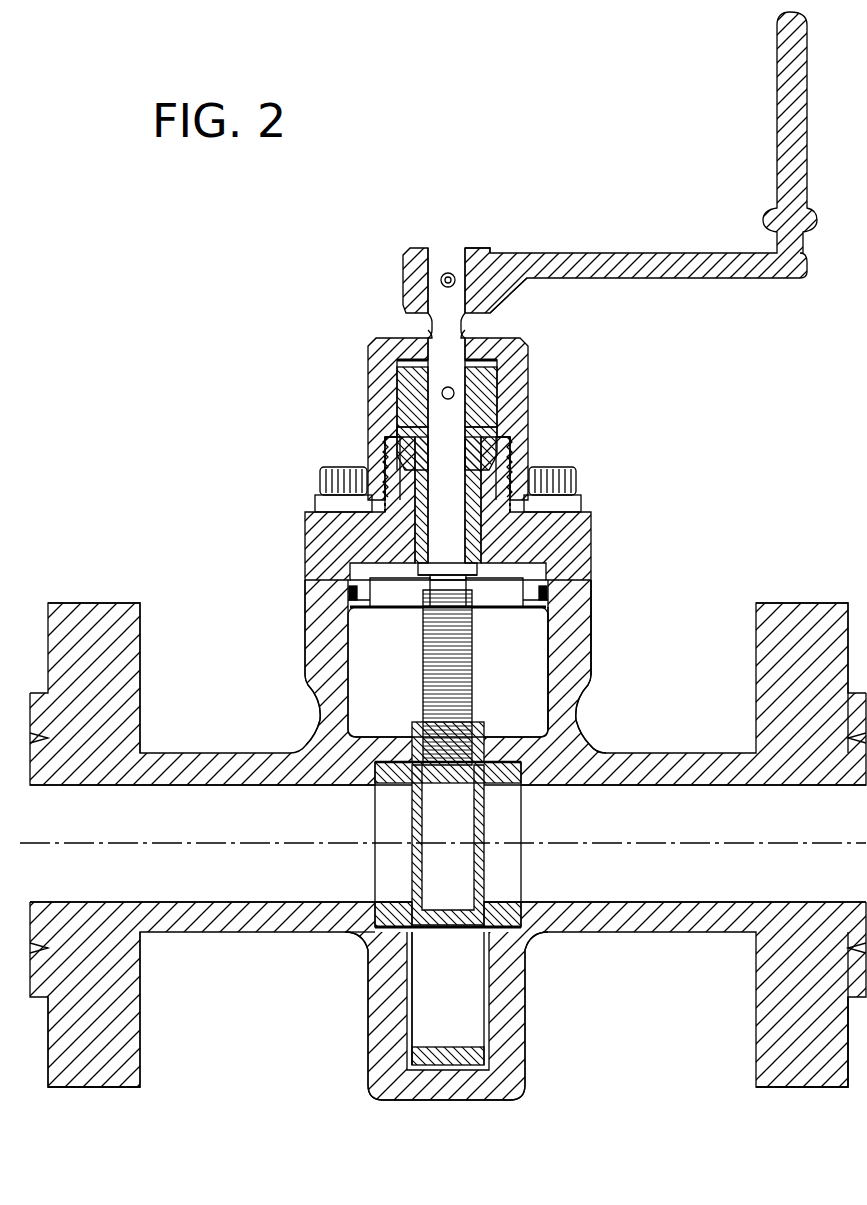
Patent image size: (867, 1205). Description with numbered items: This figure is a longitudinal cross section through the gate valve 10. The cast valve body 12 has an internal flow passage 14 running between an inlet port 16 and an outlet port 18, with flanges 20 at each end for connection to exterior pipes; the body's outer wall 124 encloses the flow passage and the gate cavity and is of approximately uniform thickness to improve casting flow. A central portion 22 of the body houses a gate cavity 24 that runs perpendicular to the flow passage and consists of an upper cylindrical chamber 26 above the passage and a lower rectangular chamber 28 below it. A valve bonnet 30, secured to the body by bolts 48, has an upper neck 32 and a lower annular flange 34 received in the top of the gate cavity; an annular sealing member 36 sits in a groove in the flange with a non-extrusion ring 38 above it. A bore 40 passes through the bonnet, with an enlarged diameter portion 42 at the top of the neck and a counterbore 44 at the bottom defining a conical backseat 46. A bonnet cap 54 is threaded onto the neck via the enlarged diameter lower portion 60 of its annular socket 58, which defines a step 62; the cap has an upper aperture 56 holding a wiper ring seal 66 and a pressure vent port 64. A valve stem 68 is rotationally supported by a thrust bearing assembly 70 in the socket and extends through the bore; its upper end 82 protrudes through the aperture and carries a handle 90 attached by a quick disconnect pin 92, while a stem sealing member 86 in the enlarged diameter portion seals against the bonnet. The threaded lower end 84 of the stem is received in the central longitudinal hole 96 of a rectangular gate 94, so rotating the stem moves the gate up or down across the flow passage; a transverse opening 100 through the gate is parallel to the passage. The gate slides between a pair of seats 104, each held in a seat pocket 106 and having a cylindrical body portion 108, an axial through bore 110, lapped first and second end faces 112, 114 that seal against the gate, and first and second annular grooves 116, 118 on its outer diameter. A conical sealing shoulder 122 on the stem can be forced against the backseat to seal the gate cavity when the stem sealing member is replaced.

The gate valve 10 is at (252, 290).
The valve body 12 is at (250, 940).
The flow passage 14 is at (212, 829).
The inlet port 16 is at (95, 902).
The outlet port 18 is at (808, 902).
The flanges 20 is at (97, 1088).
The central portion 22 is at (305, 635).
The gate cavity 24 is at (548, 662).
The upper cylindrical chamber 26 is at (491, 671).
The lower rectangular chamber 28 is at (490, 985).
The valve bonnet 30 is at (600, 516).
The upper neck 32 is at (518, 450).
The lower annular flange 34 is at (530, 605).
The annular sealing member 36 is at (545, 594).
The non-extrusion ring 38 is at (548, 586).
The bore 40 is at (428, 527).
The enlarged diameter portion 42 is at (400, 430).
The counterbore 44 is at (420, 608).
The conical backseat 46 is at (418, 568).
The bolts 48 is at (578, 480).
The bonnet cap 54 is at (535, 362).
The upper aperture 56 is at (466, 333).
The annular socket 58 is at (494, 395).
The enlarged diameter lower portion 60 is at (386, 462).
The step 62 is at (388, 438).
The pressure vent port 64 is at (515, 436).
The wiper ring seal 66 is at (426, 338).
The valve stem 68 is at (470, 515).
The thrust bearing assembly 70 is at (392, 381).
The upper end 82 is at (500, 300).
The lower end 84 is at (423, 682).
The stem sealing member 86 is at (512, 470).
The handle 90 is at (624, 253).
The quick disconnect pin 92 is at (450, 273).
The gate 94 is at (492, 870).
The central longitudinal hole 96 is at (470, 820).
The transverse opening 100 is at (470, 1045).
The seats 104 is at (368, 775).
The seat pocket 106 is at (578, 752).
The cylindrical body portion 108 is at (385, 936).
The axial through bore 110 is at (395, 900).
The first end face 112 is at (436, 929).
The second end face 114 is at (372, 905).
The first annular groove 116 is at (408, 928).
The second annular groove 118 is at (382, 928).
The conical sealing shoulder 122 is at (472, 570).
The outer wall 124 is at (318, 700).